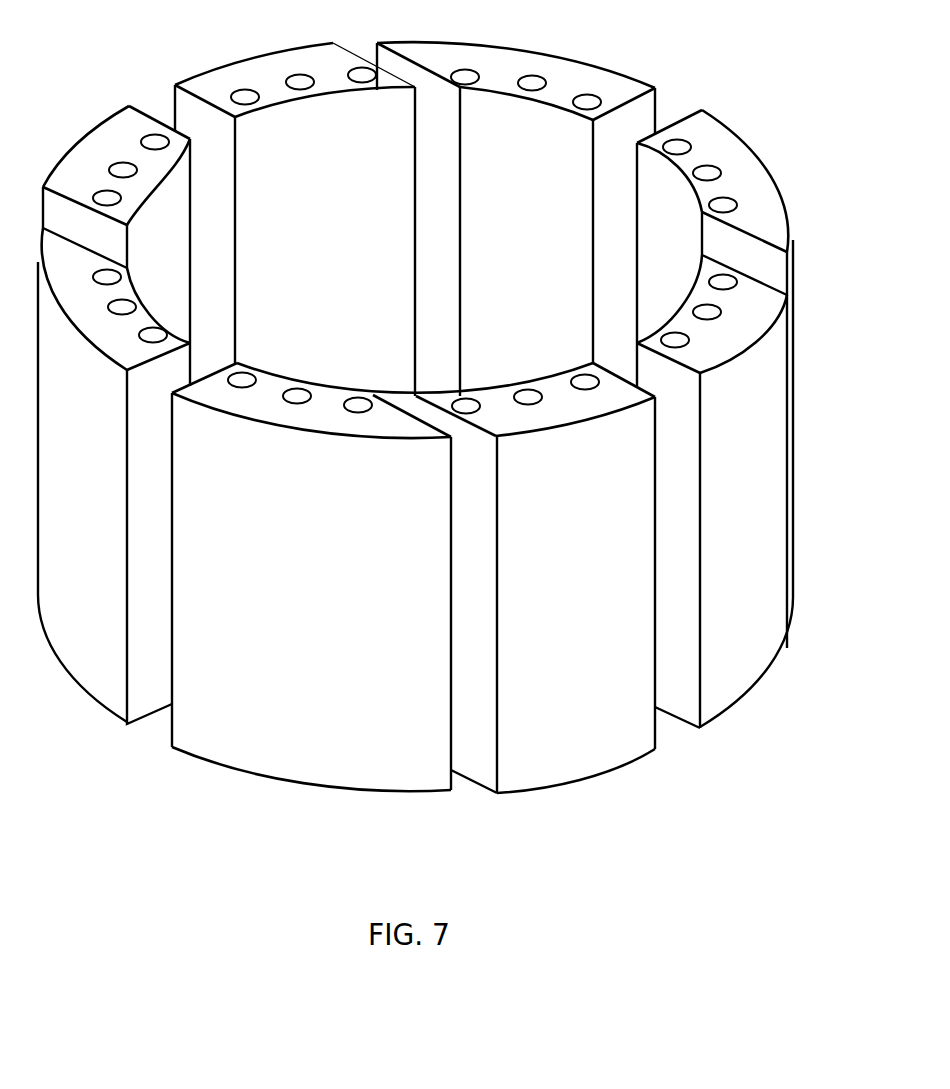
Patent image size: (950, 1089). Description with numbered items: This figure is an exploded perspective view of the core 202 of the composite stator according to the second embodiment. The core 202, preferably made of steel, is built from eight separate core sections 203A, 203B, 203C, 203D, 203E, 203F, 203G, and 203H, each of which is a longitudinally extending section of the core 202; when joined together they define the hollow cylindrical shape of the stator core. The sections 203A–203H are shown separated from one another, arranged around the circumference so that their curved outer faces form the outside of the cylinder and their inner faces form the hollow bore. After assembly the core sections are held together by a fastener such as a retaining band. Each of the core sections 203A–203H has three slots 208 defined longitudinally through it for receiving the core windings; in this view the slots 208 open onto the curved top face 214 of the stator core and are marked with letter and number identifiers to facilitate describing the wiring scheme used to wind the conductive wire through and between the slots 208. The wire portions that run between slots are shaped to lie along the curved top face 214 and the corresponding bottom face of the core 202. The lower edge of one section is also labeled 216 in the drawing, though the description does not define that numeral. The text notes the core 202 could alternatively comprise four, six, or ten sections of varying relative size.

The core 202 is at (620, 70).
The core section 203A is at (360, 173).
The core section 203B is at (538, 175).
The core section 203C is at (662, 235).
The core section 203D is at (764, 435).
The core section 203E is at (596, 497).
The core section 203F is at (327, 495).
The core section 203G is at (101, 428).
The core section 203H is at (167, 230).
The slot 208 is at (247, 88).
The top face 214 is at (589, 410).
The bottom edge of segment 216 is at (582, 775).